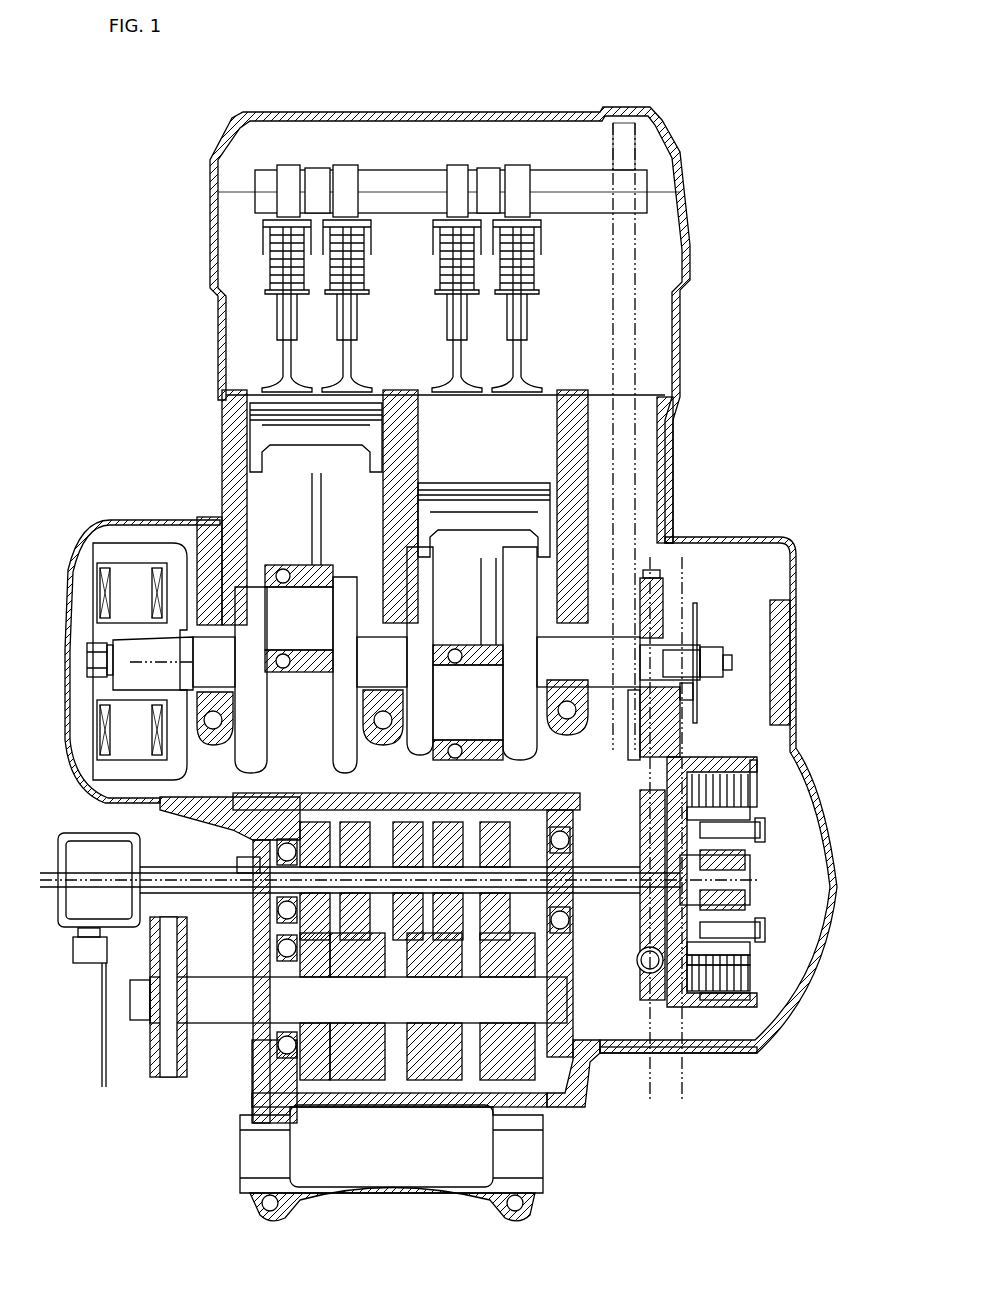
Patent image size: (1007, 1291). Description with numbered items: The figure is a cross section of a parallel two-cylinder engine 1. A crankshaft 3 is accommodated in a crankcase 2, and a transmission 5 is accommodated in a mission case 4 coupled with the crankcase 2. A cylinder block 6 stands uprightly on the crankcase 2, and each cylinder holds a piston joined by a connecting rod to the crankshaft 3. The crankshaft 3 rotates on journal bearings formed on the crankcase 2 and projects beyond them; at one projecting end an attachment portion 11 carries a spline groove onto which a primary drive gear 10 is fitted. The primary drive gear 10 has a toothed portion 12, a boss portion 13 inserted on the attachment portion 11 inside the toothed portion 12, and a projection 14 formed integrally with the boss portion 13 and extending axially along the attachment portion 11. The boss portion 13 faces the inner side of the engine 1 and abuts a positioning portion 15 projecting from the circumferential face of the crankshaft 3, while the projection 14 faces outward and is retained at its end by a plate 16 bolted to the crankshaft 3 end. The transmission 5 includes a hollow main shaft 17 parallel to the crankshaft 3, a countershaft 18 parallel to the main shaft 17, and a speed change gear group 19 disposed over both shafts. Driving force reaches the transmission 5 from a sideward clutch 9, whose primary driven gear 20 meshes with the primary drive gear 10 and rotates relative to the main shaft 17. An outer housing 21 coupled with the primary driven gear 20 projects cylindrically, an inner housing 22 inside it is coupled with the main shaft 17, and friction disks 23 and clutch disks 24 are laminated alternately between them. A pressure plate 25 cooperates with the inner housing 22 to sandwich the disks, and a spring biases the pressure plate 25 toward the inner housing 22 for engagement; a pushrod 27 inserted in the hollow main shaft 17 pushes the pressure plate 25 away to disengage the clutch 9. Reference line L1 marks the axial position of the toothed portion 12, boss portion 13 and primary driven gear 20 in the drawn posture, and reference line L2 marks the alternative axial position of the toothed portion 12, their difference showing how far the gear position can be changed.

The engine 1 is at (747, 138).
The crankcase 2 is at (96, 520).
The crankshaft 3 is at (255, 600).
The mission case 4 is at (228, 818).
The transmission 5 is at (355, 1088).
The cylinder block 6 is at (673, 452).
The clutch 9 is at (770, 782).
The primary drive gear 10 is at (666, 596).
The attachment portion 11 is at (682, 652).
The toothed portion 12 is at (655, 580).
The boss portion 13 is at (665, 627).
The projection 14 is at (672, 692).
The positioning portion 15 is at (634, 700).
The plate 16 is at (697, 693).
The main shaft 17 is at (470, 858).
The countershaft 18 is at (575, 1060).
The speed change gear group 19 is at (410, 1085).
The primary driven gear 20 is at (640, 790).
The outer housing 21 is at (720, 1008).
The inner housing 22 is at (653, 973).
The friction disks 23 is at (735, 1000).
The clutch disks 24 is at (745, 985).
The pressure plate 25 is at (757, 975).
The pushrod 27 is at (290, 1010).
The reference position L1 is at (651, 562).
The reference position L2 is at (684, 570).